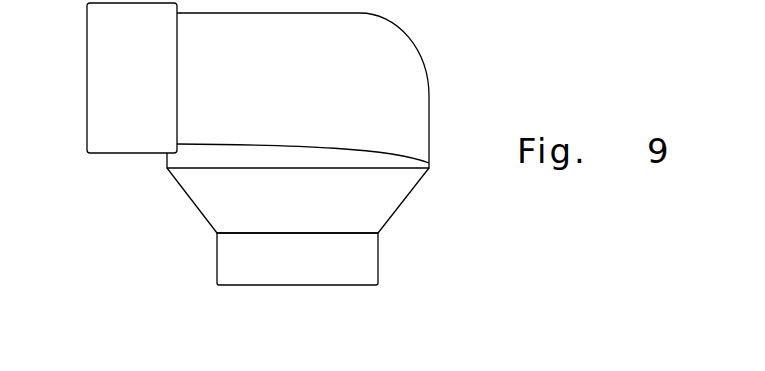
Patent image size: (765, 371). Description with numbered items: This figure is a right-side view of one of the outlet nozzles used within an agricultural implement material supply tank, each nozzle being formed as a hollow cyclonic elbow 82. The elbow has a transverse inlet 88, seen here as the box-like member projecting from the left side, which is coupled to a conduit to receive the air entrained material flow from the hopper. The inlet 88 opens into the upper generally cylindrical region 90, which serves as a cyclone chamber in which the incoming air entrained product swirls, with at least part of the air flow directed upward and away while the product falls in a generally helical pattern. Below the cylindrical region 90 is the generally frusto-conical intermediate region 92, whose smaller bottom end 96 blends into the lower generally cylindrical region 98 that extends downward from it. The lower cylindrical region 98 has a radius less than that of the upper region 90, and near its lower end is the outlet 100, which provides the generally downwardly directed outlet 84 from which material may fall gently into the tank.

The hollow cyclonic elbow 82 is at (448, 185).
The downwardly directed outlet 84 is at (309, 287).
The transverse inlet 88 is at (96, 104).
The upper cylindrical region 90 is at (429, 110).
The frusto-conical intermediate region 92 is at (188, 200).
The smaller bottom end 96 is at (379, 236).
The lower cylindrical region 98 is at (232, 274).
The outlet 100 is at (303, 288).